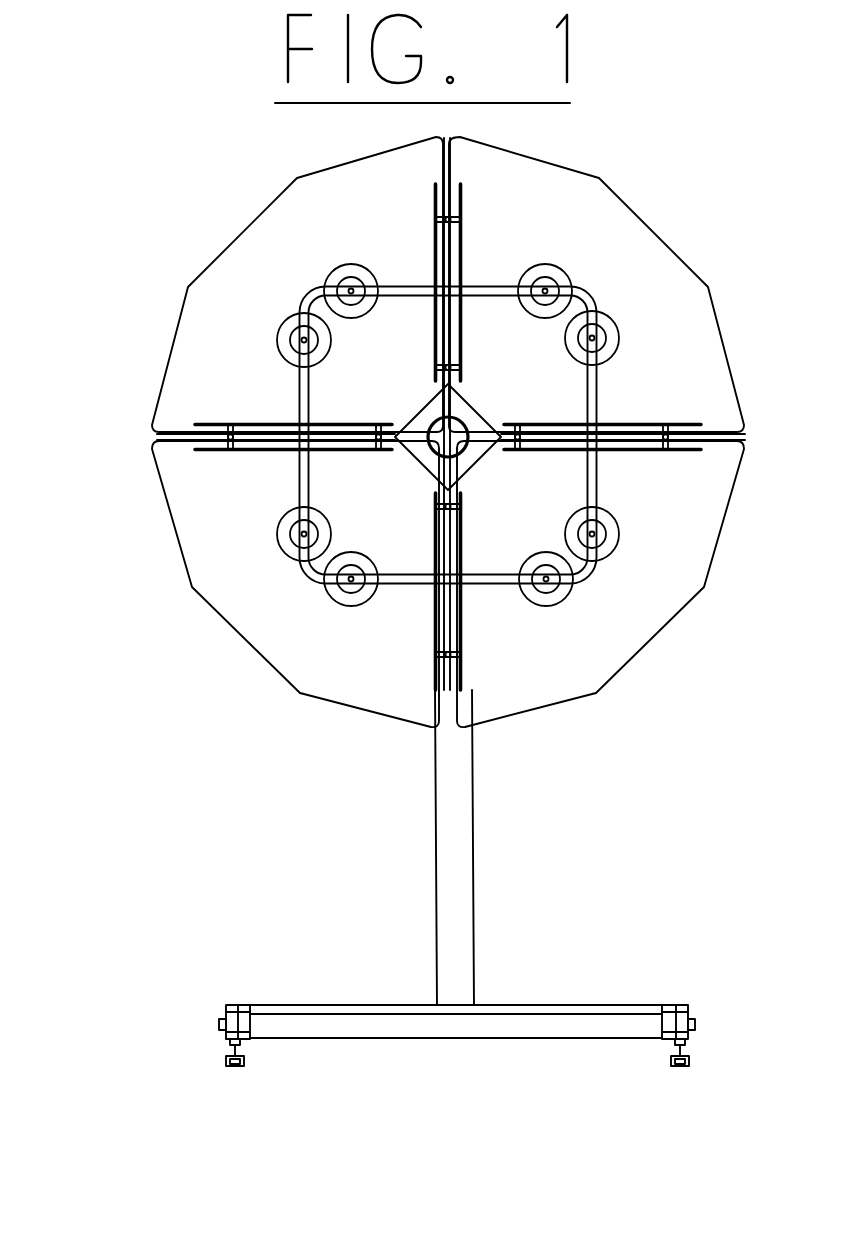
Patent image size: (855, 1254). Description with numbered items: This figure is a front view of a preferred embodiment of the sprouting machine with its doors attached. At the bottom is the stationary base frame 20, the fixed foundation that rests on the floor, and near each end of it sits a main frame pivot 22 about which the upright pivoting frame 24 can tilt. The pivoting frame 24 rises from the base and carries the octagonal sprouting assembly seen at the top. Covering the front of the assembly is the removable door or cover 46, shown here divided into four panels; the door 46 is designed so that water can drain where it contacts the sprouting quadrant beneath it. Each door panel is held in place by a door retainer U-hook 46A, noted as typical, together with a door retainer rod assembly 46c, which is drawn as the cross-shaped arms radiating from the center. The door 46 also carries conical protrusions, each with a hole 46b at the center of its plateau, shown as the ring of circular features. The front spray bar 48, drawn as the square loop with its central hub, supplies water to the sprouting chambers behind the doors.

The stationary base frame 20 is at (222, 996).
The main frame pivot 22 is at (252, 1040).
The pivoting frame 24 is at (445, 820).
The removable door or cover 46 is at (376, 432).
The door retainer U-hook 46A is at (180, 553).
The hole in center of plateau of conical shaped protrusion on door 46b is at (288, 525).
The door retainer rod assembly 46c is at (230, 432).
The front spray bar 48 is at (597, 463).